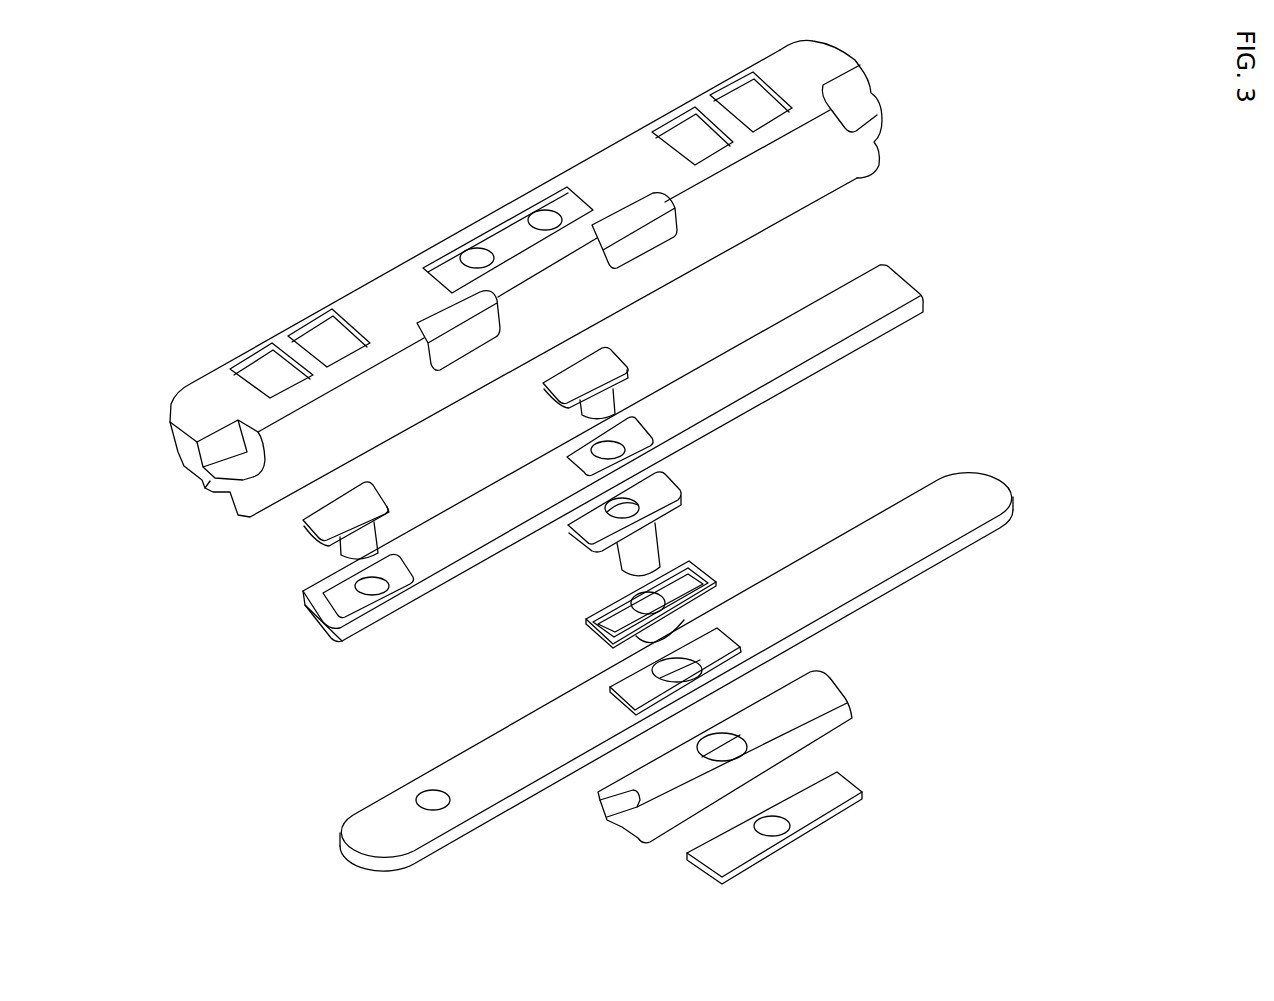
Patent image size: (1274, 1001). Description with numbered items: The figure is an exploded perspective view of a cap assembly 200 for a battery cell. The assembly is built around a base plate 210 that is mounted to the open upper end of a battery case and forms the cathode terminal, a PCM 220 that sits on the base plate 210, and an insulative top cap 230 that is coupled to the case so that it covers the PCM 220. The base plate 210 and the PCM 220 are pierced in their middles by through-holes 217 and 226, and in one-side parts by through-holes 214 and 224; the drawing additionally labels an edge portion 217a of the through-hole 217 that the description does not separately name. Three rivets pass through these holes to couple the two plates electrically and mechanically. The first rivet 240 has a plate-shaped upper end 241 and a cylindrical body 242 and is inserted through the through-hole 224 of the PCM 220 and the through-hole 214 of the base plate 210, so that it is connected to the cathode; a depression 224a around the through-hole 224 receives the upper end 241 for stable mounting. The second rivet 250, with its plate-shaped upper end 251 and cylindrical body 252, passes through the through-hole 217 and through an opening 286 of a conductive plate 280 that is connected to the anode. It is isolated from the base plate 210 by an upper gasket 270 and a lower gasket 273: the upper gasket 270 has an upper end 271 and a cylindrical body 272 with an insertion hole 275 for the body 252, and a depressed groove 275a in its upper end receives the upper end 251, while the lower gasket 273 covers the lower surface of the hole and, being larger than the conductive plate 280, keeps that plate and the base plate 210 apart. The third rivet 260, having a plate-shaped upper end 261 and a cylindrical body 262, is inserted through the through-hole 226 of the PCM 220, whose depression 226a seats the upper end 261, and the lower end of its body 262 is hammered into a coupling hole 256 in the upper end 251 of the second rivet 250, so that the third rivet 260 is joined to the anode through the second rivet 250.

The cap assembly 200 is at (170, 93).
The base plate 210 is at (717, 636).
The through-hole 214 is at (427, 793).
The through-hole 217 is at (690, 662).
The edge of contact plate 217a is at (633, 698).
The PCM 220 is at (645, 452).
The through-hole 224 is at (360, 593).
The depression 224a is at (312, 610).
The through-hole 226 is at (567, 457).
The depression 226a is at (597, 447).
The top cap 230 is at (842, 108).
The first rivet 240 is at (260, 557).
The upper end 241 is at (303, 527).
The cylindrical body 242 is at (348, 550).
The second rivet 250 is at (661, 487).
The upper end 251 is at (680, 483).
The cylindrical body 252 is at (660, 553).
The coupling hole 256 is at (632, 503).
The third rivet 260 is at (598, 357).
The upper end 261 is at (605, 349).
The cylindrical body 262 is at (588, 413).
The upper gasket 270 is at (673, 674).
The upper end 271 is at (603, 638).
The cylindrical body 272 is at (708, 602).
The lower gasket 273 is at (842, 688).
The insertion hole 275 is at (641, 602).
The depressed groove 275a is at (587, 622).
The conductive plate 280 is at (830, 808).
The opening 286 is at (773, 827).